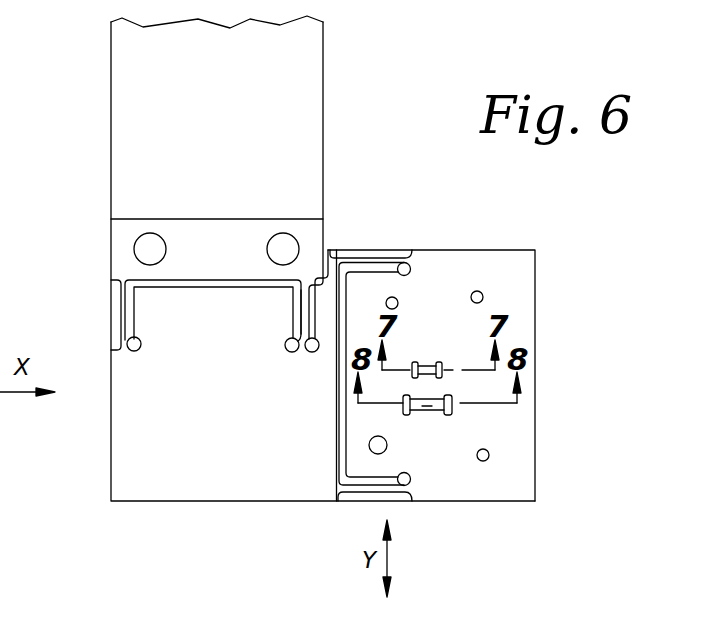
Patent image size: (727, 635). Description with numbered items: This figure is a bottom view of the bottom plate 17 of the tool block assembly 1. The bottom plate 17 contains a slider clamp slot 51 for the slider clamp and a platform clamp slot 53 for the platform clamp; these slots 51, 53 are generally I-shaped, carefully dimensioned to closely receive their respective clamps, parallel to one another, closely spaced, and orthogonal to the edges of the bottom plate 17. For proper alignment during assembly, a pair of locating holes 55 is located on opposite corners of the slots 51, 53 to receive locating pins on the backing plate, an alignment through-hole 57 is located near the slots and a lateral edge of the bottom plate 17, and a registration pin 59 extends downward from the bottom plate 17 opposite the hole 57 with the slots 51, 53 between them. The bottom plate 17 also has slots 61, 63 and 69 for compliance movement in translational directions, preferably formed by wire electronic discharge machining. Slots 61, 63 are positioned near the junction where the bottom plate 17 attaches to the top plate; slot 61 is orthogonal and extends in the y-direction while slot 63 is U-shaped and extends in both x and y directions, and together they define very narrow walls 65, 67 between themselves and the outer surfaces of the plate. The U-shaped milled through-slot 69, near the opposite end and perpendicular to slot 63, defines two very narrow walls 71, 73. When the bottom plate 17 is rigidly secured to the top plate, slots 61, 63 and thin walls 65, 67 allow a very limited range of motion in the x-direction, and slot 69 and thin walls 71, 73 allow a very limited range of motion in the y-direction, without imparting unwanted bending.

The mounting assembly 1 is at (578, 223).
The bottom plate 17 is at (509, 484).
The slider clamp slot 51 is at (427, 362).
The platform clamp slot 53 is at (384, 449).
The locating holes 55 is at (396, 299).
The alignment through-hole 57 is at (482, 294).
The registration pin 59 is at (424, 415).
The slot 61 is at (337, 249).
The slot 63 is at (128, 328).
The wall 65 is at (294, 323).
The wall 67 is at (118, 300).
The through-slot 69 is at (397, 262).
The wall 71 is at (367, 249).
The wall 73 is at (367, 502).